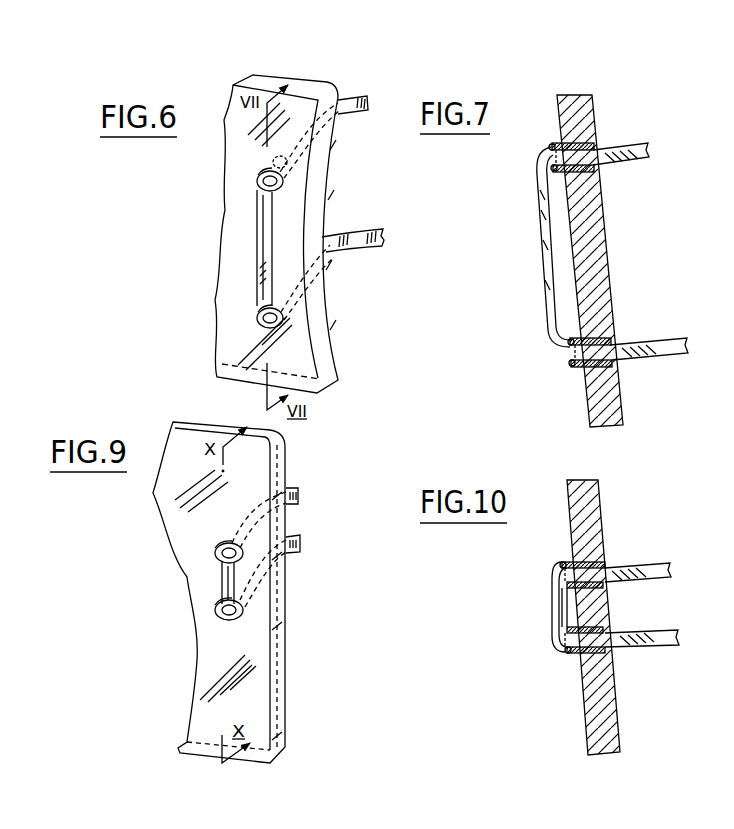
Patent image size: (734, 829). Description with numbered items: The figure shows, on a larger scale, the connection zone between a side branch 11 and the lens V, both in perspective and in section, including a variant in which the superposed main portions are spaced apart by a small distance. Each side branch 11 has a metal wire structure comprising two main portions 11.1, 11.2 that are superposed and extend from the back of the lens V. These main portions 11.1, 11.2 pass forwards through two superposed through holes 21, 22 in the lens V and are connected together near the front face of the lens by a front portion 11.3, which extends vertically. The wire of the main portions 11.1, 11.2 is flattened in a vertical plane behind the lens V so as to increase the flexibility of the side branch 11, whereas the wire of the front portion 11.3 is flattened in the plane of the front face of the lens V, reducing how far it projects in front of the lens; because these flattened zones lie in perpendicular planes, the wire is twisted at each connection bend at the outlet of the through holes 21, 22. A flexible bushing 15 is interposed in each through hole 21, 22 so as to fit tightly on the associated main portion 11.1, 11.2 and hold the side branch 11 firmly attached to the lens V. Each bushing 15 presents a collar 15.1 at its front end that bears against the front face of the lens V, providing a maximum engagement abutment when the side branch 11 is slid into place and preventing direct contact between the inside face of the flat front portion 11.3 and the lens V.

In FIG. 6, the side branch 11 is at (291, 181).
In FIG. 7, the side branch 11 is at (607, 235).
In FIG. 9, the side branch 11 is at (253, 542).
In FIG. 10, the side branch 11 is at (607, 590).
In FIG. 6, the main portion 11.1 is at (350, 113).
In FIG. 7, the main portion 11.1 is at (627, 153).
In FIG. 9, the main portion 11.1 is at (300, 497).
In FIG. 10, the main portion 11.1 is at (637, 577).
In FIG. 6, the main portion 11.2 is at (368, 250).
In FIG. 7, the main portion 11.2 is at (667, 352).
In FIG. 9, the main portion 11.2 is at (303, 547).
In FIG. 10, the main portion 11.2 is at (645, 645).
In FIG. 6, the front portion 11.3 is at (263, 260).
In FIG. 7, the front portion 11.3 is at (543, 250).
In FIG. 9, the front portion 11.3 is at (215, 617).
In FIG. 10, the front portion 11.3 is at (558, 603).
In FIG. 6, the flexible bushing 15 is at (258, 165).
In FIG. 7, the flexible bushing 15 is at (588, 135).
In FIG. 9, the flexible bushing 15 is at (220, 537).
In FIG. 10, the flexible bushing 15 is at (587, 560).
In FIG. 6, the collar 15.1 is at (257, 185).
In FIG. 7, the collar 15.1 is at (552, 147).
In FIG. 9, the collar 15.1 is at (222, 560).
In FIG. 10, the collar 15.1 is at (565, 564).
In FIG. 6, the through hole 21 is at (318, 165).
In FIG. 7, the through hole 21 is at (577, 173).
In FIG. 9, the through hole 21 is at (282, 523).
In FIG. 10, the through hole 21 is at (595, 588).
In FIG. 6, the through hole 22 is at (290, 312).
In FIG. 7, the through hole 22 is at (607, 365).
In FIG. 9, the through hole 22 is at (248, 590).
In FIG. 10, the through hole 22 is at (600, 627).
In FIG. 6, the lens V is at (327, 358).
In FIG. 7, the lens V is at (590, 393).
In FIG. 9, the lens V is at (257, 723).
In FIG. 10, the lens V is at (593, 717).